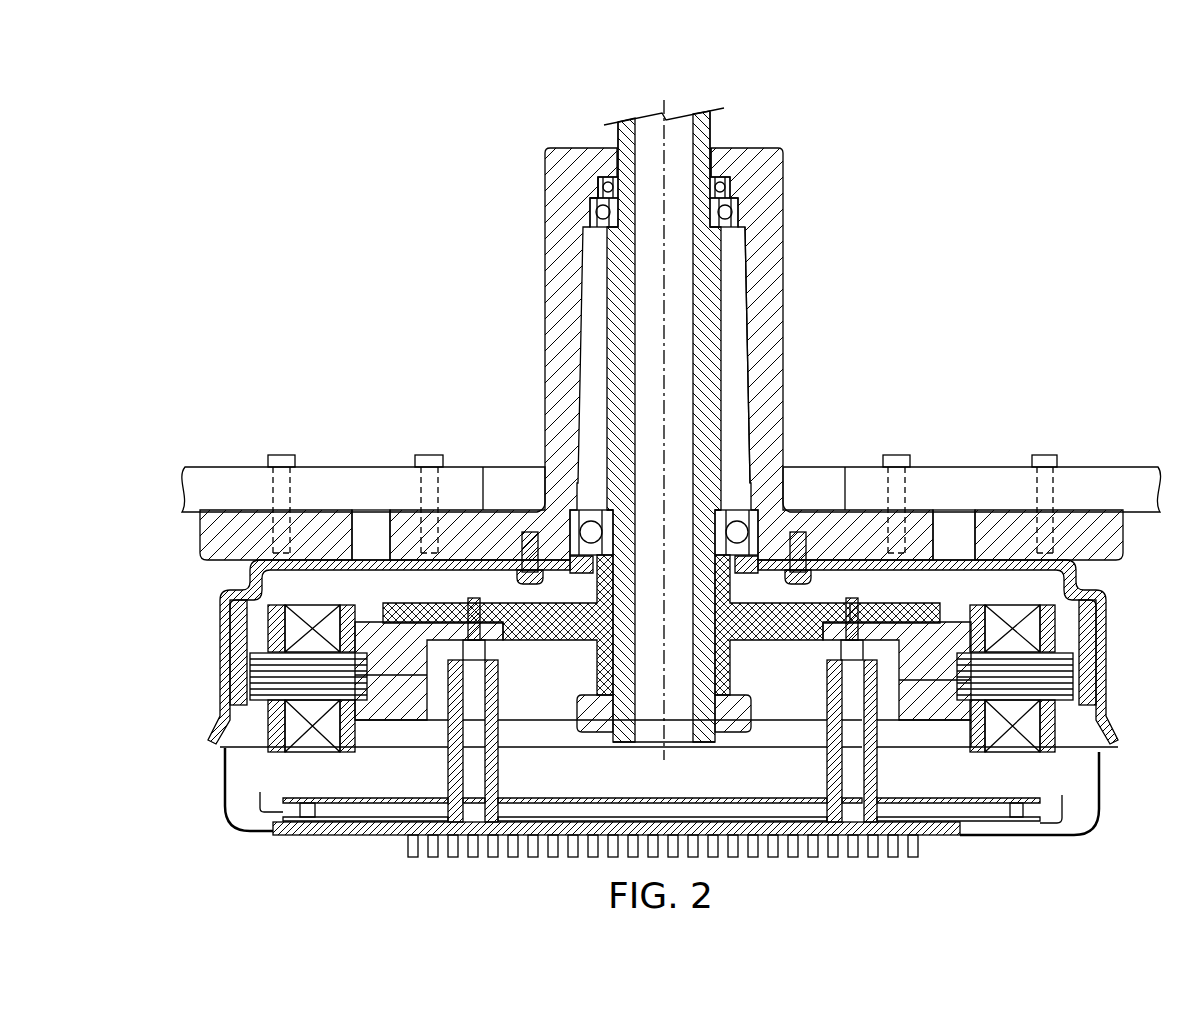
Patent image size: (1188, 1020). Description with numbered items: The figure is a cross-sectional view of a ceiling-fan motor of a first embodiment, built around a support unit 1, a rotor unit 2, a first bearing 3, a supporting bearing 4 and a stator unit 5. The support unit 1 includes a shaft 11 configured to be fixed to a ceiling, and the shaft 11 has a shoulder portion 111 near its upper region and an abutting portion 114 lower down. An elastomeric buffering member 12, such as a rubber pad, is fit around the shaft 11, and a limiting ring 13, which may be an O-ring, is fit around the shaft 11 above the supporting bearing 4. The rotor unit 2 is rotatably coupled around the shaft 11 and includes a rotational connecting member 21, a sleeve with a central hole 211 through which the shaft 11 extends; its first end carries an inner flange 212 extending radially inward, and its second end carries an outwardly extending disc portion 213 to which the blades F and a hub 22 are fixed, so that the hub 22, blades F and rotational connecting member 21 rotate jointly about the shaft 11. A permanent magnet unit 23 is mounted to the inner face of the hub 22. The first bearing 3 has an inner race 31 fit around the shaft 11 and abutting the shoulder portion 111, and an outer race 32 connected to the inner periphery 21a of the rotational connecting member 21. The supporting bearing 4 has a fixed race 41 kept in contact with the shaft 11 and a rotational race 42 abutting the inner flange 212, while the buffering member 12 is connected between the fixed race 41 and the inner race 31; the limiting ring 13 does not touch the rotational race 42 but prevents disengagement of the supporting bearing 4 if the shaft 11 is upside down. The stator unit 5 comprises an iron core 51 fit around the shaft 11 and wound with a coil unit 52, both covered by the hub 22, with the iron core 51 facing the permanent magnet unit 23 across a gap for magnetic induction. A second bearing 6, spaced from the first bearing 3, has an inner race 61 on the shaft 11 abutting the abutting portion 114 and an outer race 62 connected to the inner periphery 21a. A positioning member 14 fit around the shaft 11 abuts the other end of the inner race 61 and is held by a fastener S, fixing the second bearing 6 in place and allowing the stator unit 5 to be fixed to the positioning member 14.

The support unit 1 is at (730, 392).
The shaft 11 is at (712, 348).
The shoulder portion 111 is at (612, 225).
The abutting portion 114 is at (608, 508).
The buffering member 12 is at (724, 198).
The limiting ring 13 is at (620, 177).
The positioning member 14 is at (430, 602).
The rotor unit 2 is at (522, 330).
The rotational connecting member 21 is at (768, 233).
The inner periphery 21a is at (735, 285).
The central hole 211 is at (716, 157).
The inner flange 212 is at (603, 177).
The disc portion 213 is at (915, 520).
The hub 22 is at (222, 647).
The permanent magnet unit 23 is at (237, 667).
The first bearing 3 is at (470, 203).
The inner race 31 is at (606, 226).
The outer race 32 is at (590, 206).
The supporting bearing 4 is at (460, 123).
The fixed race 41 is at (614, 191).
The rotational race 42 is at (601, 186).
The stator unit 5 is at (258, 728).
The iron core 51 is at (258, 685).
The coil unit 52 is at (307, 610).
The second bearing 6 is at (400, 425).
The inner race 61 is at (595, 510).
The outer race 62 is at (578, 508).
The blades F is at (215, 476).
The fastener S is at (742, 732).